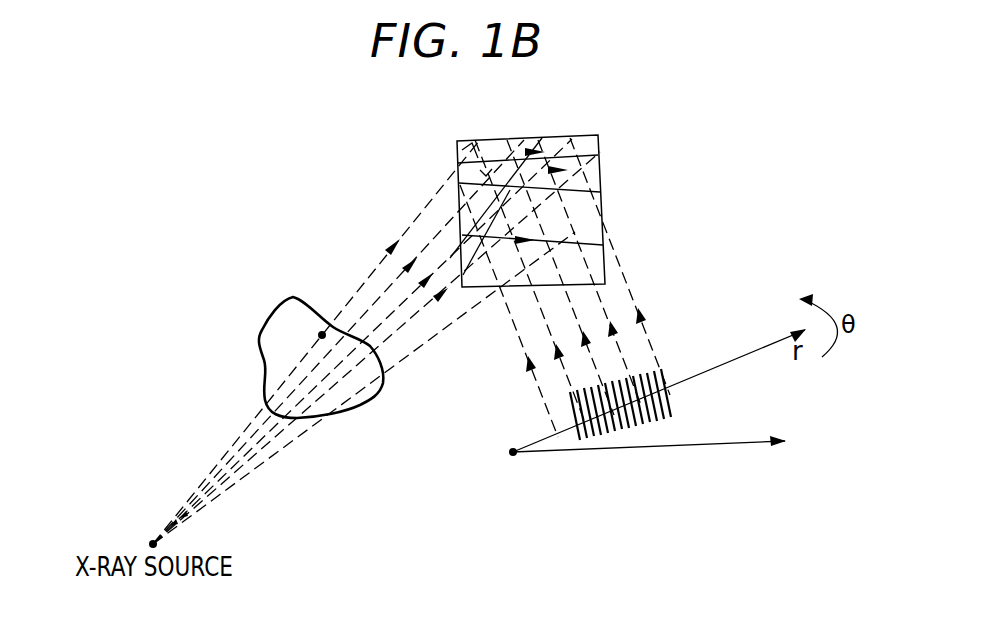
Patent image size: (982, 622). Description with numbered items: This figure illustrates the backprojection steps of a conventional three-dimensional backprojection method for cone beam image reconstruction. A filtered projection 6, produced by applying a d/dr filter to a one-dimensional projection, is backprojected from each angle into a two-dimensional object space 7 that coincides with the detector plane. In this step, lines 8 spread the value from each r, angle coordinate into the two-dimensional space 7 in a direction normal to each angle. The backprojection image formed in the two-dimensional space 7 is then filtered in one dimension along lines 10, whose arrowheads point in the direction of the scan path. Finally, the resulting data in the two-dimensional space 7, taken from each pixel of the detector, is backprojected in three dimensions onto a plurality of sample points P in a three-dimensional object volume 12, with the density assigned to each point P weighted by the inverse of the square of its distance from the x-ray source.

The filtered projection 6 is at (640, 373).
The 2D object space 7 is at (582, 140).
The lines 8 is at (625, 297).
The lines 10 is at (598, 147).
The 3D object volume 12 is at (290, 297).
The sample points P is at (322, 335).